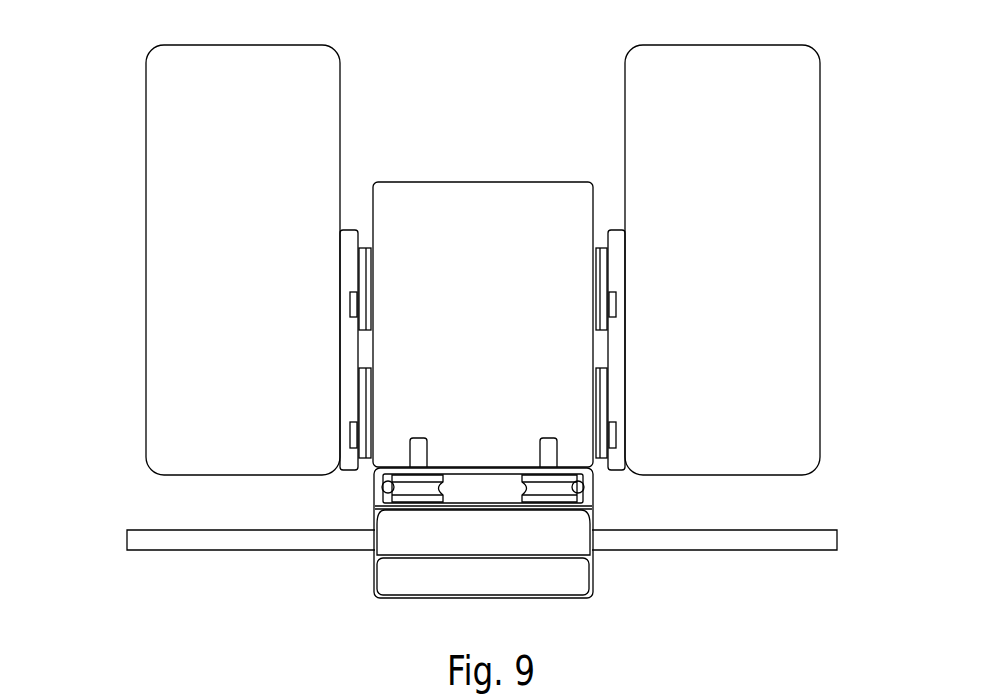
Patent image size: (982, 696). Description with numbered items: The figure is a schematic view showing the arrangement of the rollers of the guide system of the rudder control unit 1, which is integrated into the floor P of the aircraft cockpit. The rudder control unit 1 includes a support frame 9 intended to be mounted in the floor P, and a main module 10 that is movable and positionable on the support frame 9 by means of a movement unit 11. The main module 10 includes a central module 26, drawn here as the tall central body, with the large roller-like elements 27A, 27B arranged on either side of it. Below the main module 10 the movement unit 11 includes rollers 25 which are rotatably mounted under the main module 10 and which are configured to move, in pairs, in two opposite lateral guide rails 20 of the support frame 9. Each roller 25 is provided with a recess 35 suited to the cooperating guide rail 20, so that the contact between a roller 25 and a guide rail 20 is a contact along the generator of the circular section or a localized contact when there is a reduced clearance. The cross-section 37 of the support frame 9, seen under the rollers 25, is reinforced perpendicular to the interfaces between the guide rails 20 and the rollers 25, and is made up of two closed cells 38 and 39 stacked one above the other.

The rudder control unit 1 is at (106, 473).
The main module 10 is at (478, 138).
The central module 26 is at (528, 176).
The first roller 27A is at (146, 183).
The second roller 27B is at (820, 177).
The lateral guide rail 20 is at (578, 483).
The recess 35 is at (412, 487).
The roller 25 is at (385, 508).
The cross-section 37 is at (358, 578).
The closed cell 38 is at (436, 542).
The closed cell 39 is at (529, 588).
The support frame 9 is at (593, 560).
The movement unit 11 is at (278, 563).
The floor P is at (780, 549).